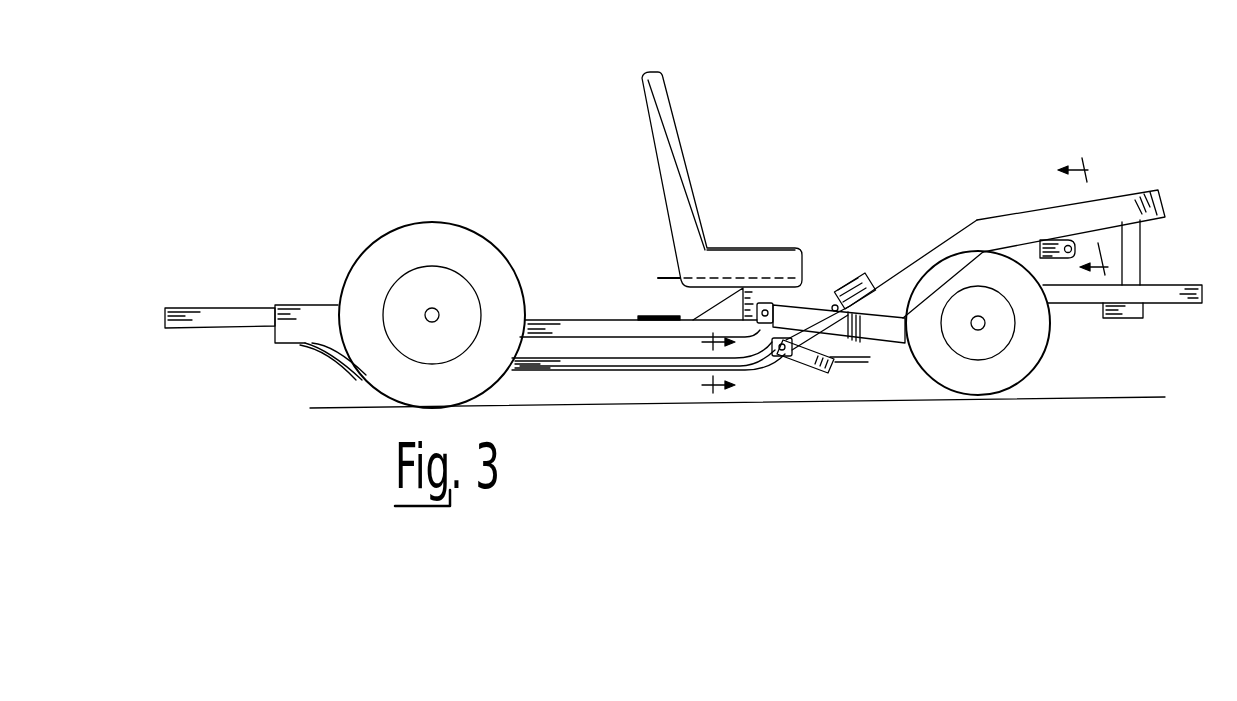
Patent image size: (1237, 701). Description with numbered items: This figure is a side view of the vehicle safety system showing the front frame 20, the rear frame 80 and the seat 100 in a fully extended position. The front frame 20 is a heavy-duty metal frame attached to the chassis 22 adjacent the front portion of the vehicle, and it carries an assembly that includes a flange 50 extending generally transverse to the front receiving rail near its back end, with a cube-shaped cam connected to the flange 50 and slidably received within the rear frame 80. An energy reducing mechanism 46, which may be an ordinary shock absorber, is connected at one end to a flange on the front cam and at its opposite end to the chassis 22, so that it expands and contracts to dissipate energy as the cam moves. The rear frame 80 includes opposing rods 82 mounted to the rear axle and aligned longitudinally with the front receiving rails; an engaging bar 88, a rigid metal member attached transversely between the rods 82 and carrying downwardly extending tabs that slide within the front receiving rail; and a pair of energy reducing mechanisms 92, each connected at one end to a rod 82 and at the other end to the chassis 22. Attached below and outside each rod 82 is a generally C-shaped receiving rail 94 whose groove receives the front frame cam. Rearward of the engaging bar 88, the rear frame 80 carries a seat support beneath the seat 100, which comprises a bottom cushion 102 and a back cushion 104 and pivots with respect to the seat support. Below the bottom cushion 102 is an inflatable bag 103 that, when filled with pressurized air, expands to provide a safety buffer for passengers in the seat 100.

The front frame 20 is at (1162, 196).
The chassis 22 is at (1163, 298).
The energy reducing mechanism 46 is at (1023, 252).
The flange 50 is at (798, 357).
The rear frame 80 is at (222, 308).
The rod 82 is at (578, 320).
The engaging bar 88 is at (843, 275).
The energy reducing mechanism 92 is at (897, 340).
The receiving rail 94 is at (562, 372).
The seat 100 is at (680, 143).
The bottom cushion 102 is at (772, 255).
The bag 103 is at (795, 278).
The back cushion 104 is at (652, 128).